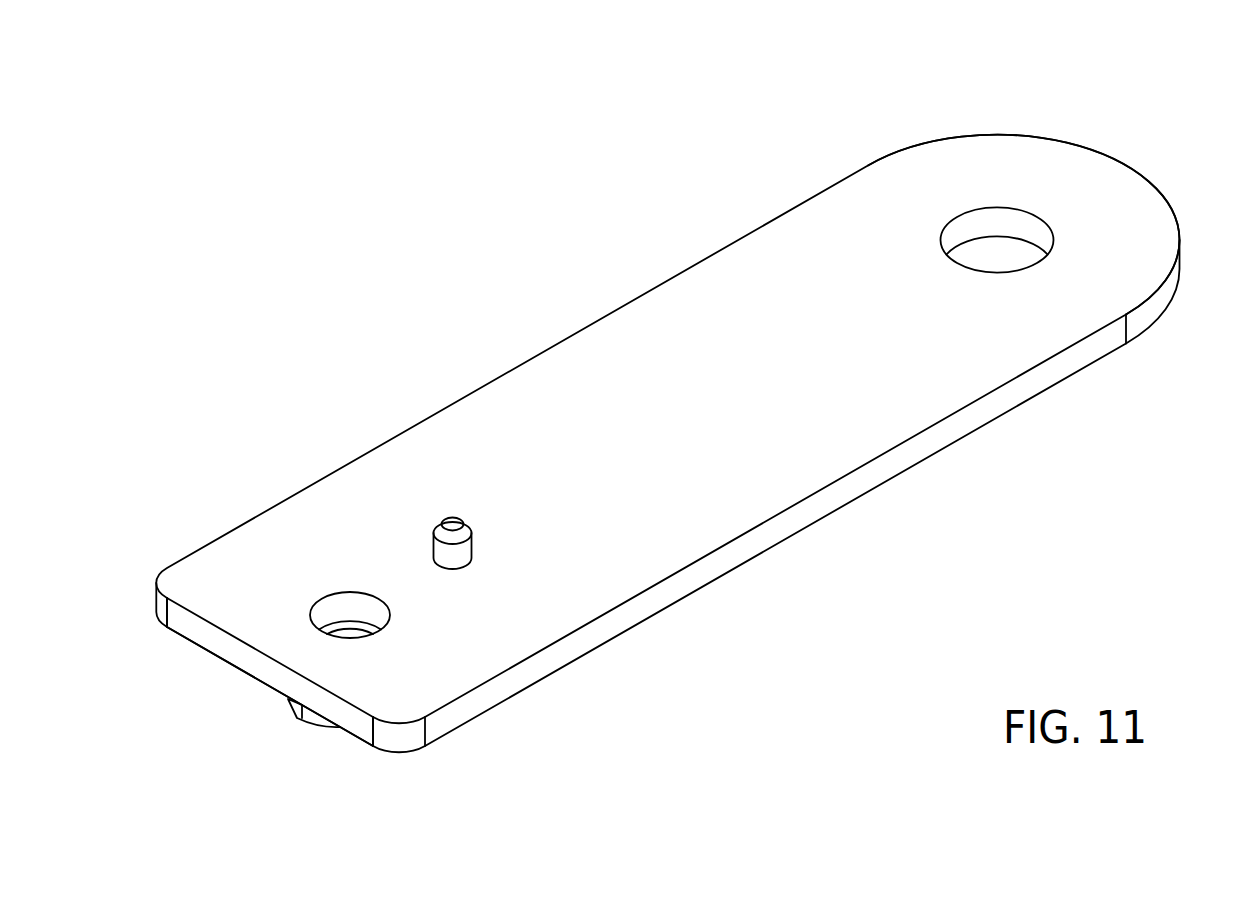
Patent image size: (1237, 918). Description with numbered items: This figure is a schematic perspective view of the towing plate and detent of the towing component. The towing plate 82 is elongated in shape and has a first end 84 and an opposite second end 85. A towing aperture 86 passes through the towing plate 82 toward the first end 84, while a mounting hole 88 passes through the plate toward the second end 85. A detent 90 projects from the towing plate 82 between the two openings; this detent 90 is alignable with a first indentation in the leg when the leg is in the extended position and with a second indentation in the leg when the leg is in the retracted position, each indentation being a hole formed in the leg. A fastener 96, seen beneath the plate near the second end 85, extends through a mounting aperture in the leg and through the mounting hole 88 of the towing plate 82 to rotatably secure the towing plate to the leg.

The towing plate 82 is at (888, 513).
The first end 84 is at (1090, 148).
The second end 85 is at (197, 642).
The towing aperture 86 is at (992, 210).
The mounting hole 88 is at (389, 630).
The detent 90 is at (432, 530).
The fastener 96 is at (332, 730).